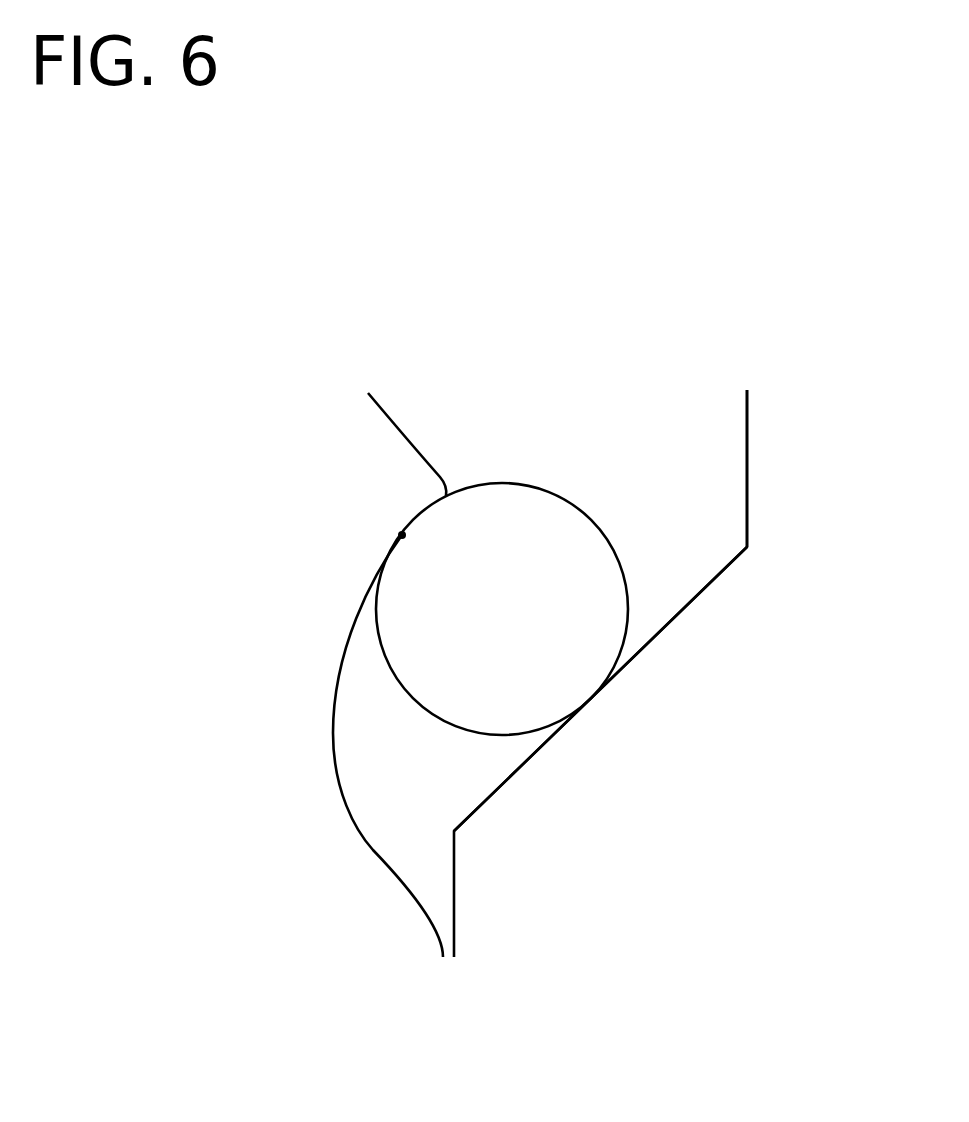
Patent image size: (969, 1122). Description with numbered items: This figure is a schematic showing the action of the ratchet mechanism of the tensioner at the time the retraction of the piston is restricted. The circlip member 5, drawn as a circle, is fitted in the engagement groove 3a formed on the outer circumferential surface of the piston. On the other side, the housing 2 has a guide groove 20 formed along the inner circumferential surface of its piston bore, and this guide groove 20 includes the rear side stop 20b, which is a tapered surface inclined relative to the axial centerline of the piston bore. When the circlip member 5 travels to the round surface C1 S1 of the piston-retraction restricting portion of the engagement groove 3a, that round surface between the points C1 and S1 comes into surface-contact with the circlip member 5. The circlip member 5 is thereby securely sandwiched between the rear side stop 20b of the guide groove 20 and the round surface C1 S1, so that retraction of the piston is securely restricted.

The circlip member 5 is at (518, 623).
The housing 2 is at (720, 903).
The guide groove 20 is at (732, 476).
The rear side stop 20b is at (695, 597).
The engagement groove 3a is at (373, 862).
The point S1 of round surface S1 is at (429, 444).
The point C1 of round surface C1 is at (382, 511).